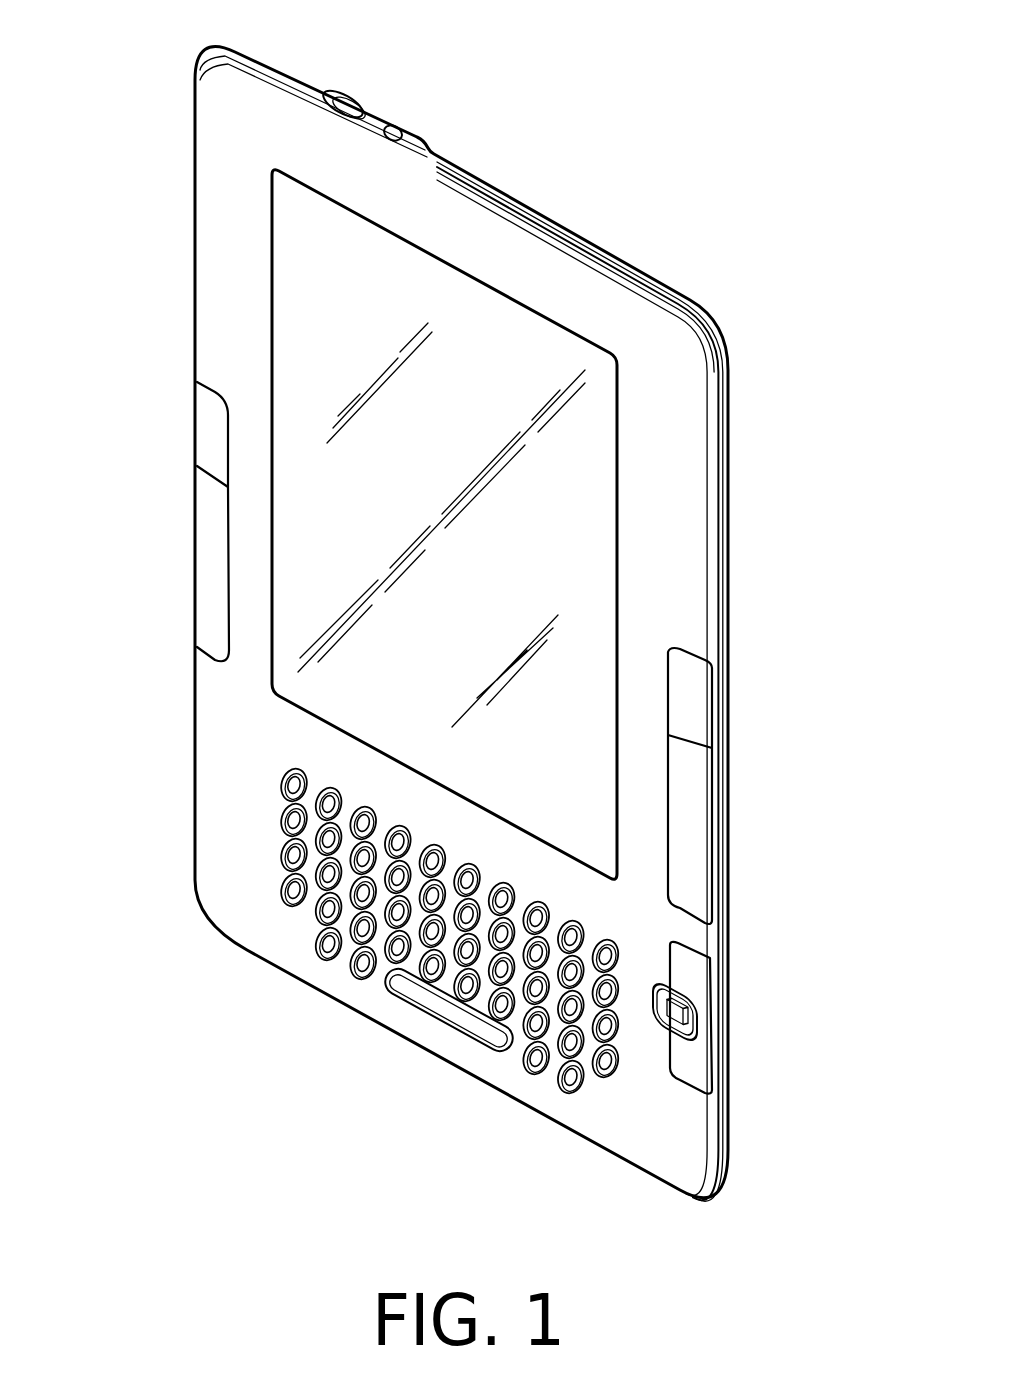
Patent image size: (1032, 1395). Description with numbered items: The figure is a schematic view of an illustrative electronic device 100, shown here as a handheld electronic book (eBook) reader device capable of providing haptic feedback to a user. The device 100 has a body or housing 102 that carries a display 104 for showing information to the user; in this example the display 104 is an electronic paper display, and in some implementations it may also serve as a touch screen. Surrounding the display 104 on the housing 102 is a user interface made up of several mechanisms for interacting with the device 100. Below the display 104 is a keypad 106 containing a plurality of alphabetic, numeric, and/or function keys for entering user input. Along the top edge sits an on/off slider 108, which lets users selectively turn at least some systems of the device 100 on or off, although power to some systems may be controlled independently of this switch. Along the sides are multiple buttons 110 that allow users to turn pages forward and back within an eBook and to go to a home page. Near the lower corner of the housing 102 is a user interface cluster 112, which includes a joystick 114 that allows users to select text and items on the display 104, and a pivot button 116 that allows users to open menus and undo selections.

The electronic device 100 is at (147, 60).
The housing 102 is at (643, 352).
The display 104 is at (325, 290).
The keypad 106 is at (268, 932).
The on/off slider 108 is at (347, 96).
The buttons 110 is at (218, 447).
The user interface cluster 112 is at (779, 1018).
The joystick 114 is at (688, 1003).
The pivot button 116 is at (697, 1070).